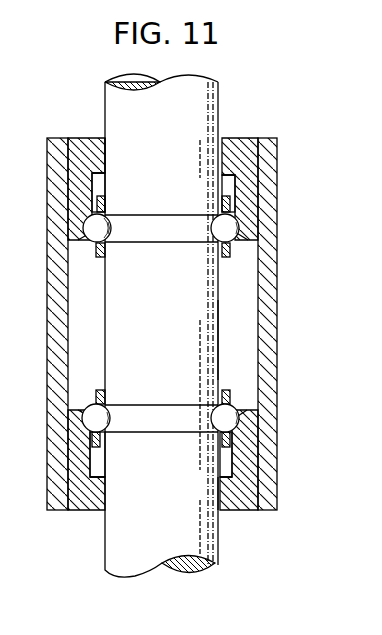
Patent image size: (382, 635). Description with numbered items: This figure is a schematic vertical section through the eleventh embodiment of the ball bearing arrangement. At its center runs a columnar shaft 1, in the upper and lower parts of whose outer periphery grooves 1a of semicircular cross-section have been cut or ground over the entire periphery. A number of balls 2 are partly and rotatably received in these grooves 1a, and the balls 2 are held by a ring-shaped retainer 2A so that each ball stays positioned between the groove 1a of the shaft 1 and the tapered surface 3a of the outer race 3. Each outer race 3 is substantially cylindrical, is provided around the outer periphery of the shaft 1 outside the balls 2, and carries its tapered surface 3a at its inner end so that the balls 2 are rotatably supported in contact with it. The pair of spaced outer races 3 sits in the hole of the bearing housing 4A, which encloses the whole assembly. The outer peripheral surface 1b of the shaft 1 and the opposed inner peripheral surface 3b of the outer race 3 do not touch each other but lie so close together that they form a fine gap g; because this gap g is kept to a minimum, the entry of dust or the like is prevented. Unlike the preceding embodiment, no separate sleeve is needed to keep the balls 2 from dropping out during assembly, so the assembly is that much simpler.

The shaft 1 is at (110, 313).
The groove 1a is at (111, 231).
The outer peripheral surface of the shaft 1b is at (219, 312).
The ball 2 is at (235, 243).
The ring-shaped retainer 2A is at (227, 198).
The outer race 3 is at (84, 137).
The tapered surface 3a is at (86, 243).
The inner peripheral surface of the outer race 3b is at (106, 163).
The bearing housing 4A is at (272, 286).
The gap g is at (104, 138).